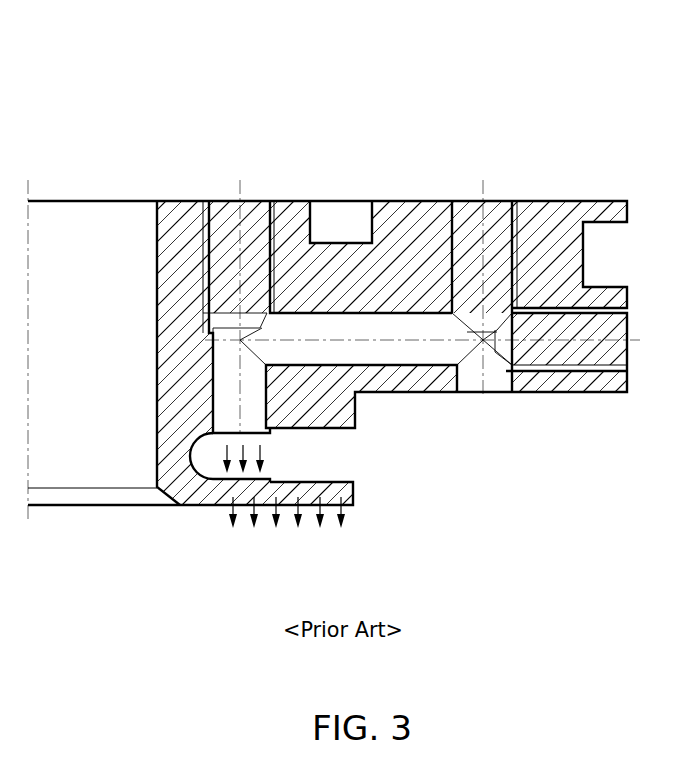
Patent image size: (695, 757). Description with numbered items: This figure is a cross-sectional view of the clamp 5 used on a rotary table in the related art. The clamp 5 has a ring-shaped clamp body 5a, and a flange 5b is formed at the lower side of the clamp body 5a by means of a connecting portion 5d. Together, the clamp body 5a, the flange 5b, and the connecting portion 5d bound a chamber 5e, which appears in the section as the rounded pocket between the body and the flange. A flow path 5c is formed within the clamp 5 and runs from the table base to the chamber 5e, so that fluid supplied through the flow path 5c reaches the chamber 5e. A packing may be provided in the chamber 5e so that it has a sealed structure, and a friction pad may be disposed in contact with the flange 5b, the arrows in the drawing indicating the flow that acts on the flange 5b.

The clamp 5 is at (111, 108).
The clamp body 5a is at (410, 233).
The flange 5b is at (330, 497).
The flow path 5c is at (437, 348).
The connecting portion 5d is at (175, 455).
The chamber 5e is at (210, 468).